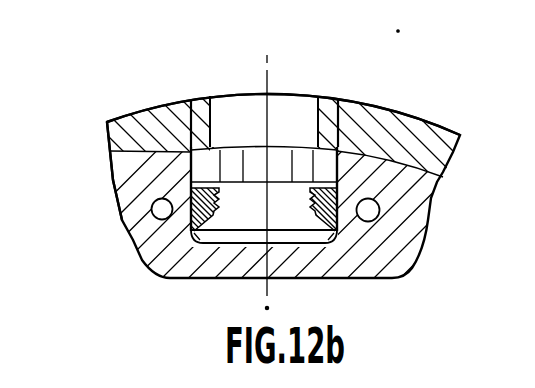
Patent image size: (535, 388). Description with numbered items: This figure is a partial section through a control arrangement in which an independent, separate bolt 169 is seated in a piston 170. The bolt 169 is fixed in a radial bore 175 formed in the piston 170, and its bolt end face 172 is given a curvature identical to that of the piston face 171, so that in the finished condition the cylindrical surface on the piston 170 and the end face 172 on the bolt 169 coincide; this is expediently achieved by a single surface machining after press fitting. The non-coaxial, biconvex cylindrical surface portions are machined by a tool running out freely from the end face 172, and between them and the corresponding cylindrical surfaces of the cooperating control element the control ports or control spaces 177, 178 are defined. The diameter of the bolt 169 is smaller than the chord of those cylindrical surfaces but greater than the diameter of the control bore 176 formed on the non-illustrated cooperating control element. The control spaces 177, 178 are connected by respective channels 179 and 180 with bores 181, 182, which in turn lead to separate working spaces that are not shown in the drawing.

The bolt 169 is at (288, 217).
The piston 170 is at (128, 232).
The piston face 171 is at (435, 116).
The bolt end face 172 is at (282, 146).
The radial bore 175 is at (175, 190).
The control bore 176 is at (233, 112).
The control port 177 is at (203, 158).
The control port 178 is at (333, 150).
The channel 179 is at (107, 130).
The channel 180 is at (340, 192).
The bore 181 is at (156, 206).
The bore 182 is at (380, 210).